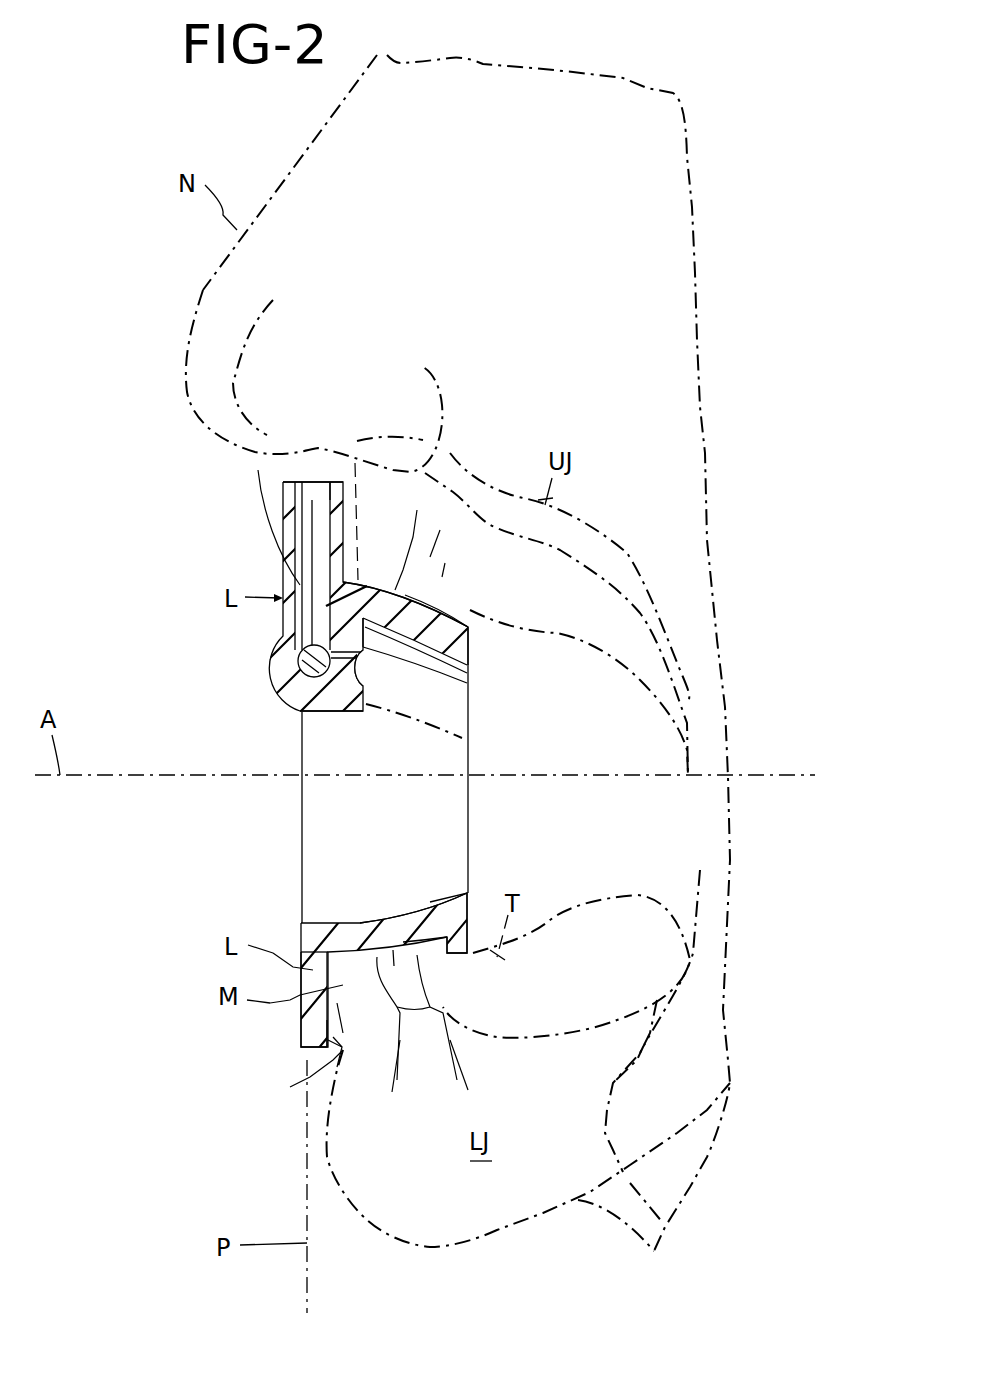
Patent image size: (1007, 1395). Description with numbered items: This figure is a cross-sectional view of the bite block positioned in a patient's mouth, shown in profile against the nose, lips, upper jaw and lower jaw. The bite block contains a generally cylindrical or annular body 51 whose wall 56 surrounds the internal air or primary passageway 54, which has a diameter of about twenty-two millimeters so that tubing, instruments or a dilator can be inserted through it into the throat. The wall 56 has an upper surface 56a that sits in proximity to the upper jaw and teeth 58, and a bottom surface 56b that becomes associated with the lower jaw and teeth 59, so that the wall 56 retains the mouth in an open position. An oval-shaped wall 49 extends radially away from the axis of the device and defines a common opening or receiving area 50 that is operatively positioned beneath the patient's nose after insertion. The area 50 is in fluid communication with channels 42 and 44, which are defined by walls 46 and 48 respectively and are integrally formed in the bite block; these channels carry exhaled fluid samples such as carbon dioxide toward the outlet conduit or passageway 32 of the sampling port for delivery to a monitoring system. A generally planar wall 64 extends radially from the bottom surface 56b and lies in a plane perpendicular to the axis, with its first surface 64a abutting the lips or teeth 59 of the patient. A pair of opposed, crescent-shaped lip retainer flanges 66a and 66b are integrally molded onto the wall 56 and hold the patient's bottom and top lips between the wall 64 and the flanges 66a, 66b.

The outlet conduit or passageway 32 is at (300, 662).
The channel 42 is at (372, 671).
The channel 44 is at (314, 536).
The wall 46 is at (345, 678).
The wall 48 is at (305, 550).
The oval-shaped wall 49 is at (323, 495).
The common opening 50 is at (300, 478).
The annular body 51 is at (378, 578).
The primary passageway 54 is at (320, 815).
The wall 56 is at (357, 922).
The upper surface 56a is at (452, 588).
The bottom surface 56b is at (432, 955).
The teeth 58 is at (412, 585).
The teeth 59 is at (388, 927).
The planar wall 64 is at (300, 1035).
The first surface 64a is at (290, 1087).
The lip retainer flange 66a is at (456, 905).
The lip retainer flange 66b is at (461, 620).